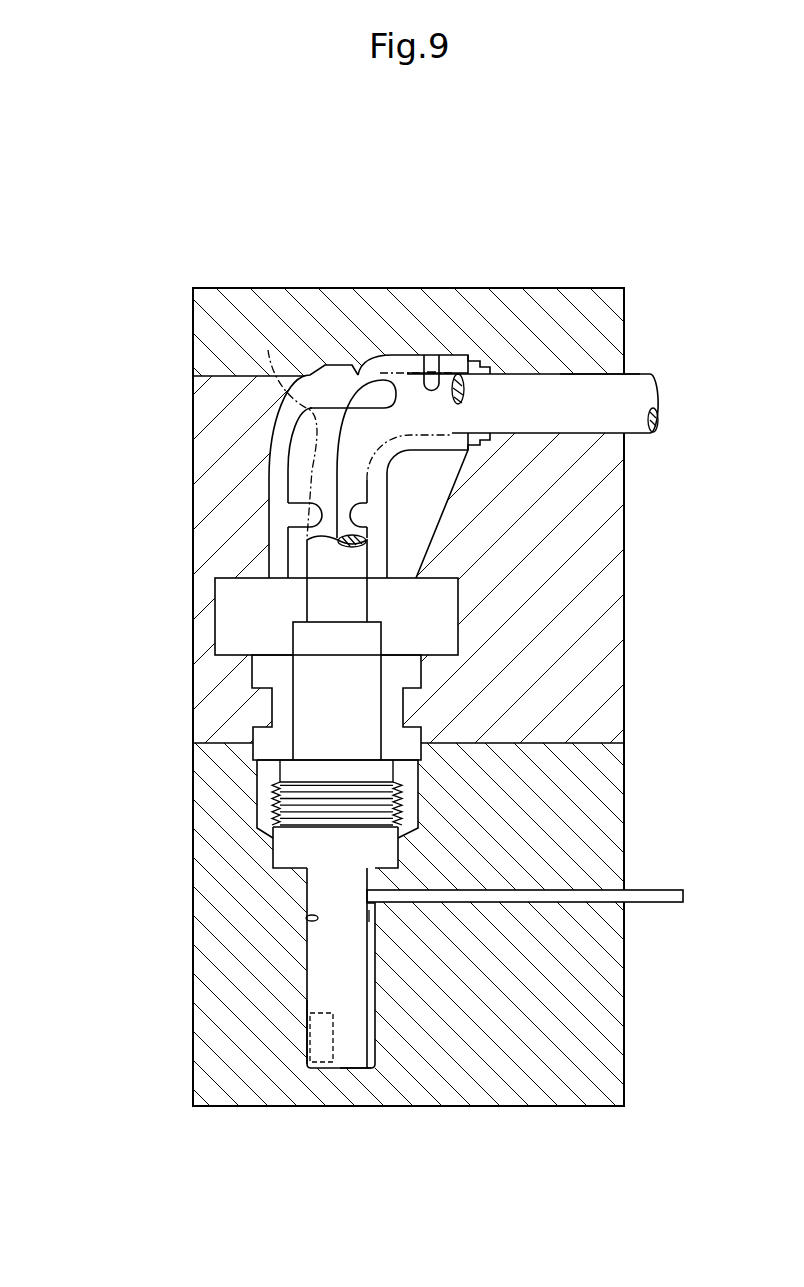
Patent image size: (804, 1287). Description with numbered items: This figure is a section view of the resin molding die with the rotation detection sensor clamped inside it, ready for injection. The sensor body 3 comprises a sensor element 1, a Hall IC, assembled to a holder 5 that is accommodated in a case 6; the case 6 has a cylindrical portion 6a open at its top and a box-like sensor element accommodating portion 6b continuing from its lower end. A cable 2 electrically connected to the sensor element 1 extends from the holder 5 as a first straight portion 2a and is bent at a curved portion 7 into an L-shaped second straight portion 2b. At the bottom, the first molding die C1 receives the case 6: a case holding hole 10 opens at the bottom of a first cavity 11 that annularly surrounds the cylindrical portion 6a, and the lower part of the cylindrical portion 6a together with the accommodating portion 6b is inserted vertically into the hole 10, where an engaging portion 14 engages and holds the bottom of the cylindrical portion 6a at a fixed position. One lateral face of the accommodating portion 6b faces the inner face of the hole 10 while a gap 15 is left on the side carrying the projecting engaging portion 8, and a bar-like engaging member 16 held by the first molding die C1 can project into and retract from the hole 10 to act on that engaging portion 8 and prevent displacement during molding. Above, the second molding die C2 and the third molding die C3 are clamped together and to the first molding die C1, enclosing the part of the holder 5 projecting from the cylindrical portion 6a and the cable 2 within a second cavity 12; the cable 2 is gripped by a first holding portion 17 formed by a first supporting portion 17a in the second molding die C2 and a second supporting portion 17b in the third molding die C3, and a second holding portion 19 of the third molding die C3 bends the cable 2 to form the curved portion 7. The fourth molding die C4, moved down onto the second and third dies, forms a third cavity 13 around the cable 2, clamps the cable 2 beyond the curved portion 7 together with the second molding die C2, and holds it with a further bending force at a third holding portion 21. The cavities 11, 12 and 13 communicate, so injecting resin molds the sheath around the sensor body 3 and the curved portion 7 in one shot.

The sensor element 1 is at (305, 1005).
The cable 2 is at (640, 400).
The first straight portion 2a is at (312, 597).
The second straight portion 2b is at (582, 380).
The sensor body 3 is at (284, 710).
The holder 5 is at (364, 706).
The case 6 is at (378, 1017).
The cylindrical portion 6a is at (292, 857).
The sensor element accommodating portion 6b is at (322, 972).
The curved portion 7 is at (288, 430).
The engaging portion 8 is at (368, 915).
The case holding hole 10 is at (306, 918).
The first cavity 11 is at (418, 804).
The second cavity 12 is at (434, 613).
The third cavity 13 is at (462, 350).
The engaging portion 14 is at (388, 868).
The gap 15 is at (376, 1058).
The engaging member 16 is at (655, 903).
The first holding portion 17 is at (324, 516).
The first supporting portion 17a is at (377, 508).
The second supporting portion 17b is at (298, 506).
The second holding portion 19 is at (349, 378).
The third holding portion 21 is at (421, 378).
The first molding die C1 is at (185, 1027).
The second molding die C2 is at (634, 669).
The third molding die C3 is at (185, 648).
The fourth molding die C4 is at (185, 326).